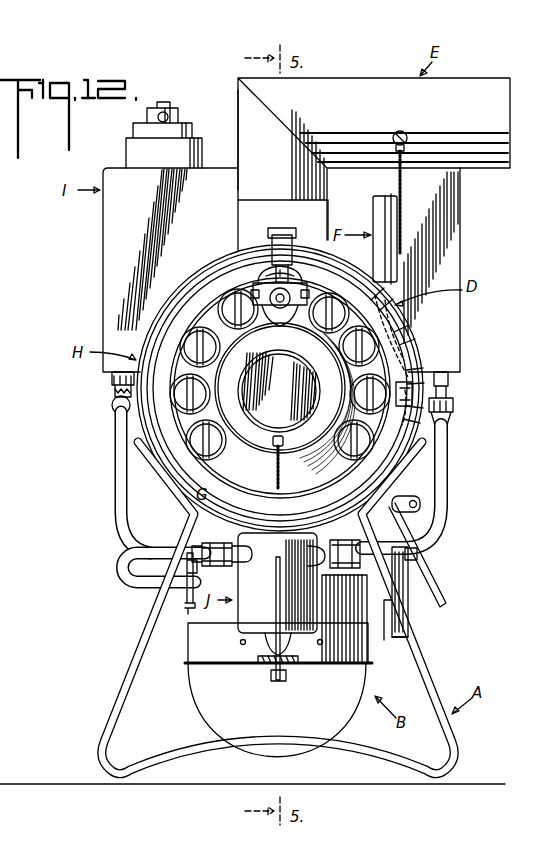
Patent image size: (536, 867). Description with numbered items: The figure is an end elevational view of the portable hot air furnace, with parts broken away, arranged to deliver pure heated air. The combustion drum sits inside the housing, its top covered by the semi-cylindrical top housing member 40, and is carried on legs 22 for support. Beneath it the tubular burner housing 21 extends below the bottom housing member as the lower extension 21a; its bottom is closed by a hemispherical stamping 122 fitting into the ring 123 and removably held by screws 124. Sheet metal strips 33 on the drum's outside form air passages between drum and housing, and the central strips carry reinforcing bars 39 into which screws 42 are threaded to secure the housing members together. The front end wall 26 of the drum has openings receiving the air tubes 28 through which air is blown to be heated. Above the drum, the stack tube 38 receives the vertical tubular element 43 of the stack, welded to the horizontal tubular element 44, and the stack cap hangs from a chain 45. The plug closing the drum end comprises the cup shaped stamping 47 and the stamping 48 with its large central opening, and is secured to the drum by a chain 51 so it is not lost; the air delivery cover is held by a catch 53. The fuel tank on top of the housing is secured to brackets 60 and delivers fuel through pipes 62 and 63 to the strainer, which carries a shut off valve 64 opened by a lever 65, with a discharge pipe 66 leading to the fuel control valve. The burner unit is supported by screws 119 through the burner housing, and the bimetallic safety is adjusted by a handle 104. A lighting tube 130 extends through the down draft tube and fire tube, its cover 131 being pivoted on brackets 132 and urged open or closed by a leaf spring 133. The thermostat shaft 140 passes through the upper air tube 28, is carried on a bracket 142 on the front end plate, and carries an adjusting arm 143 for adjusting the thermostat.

The tubular burner housing 21 is at (200, 612).
The lower extension of burner housing tube 21a is at (362, 620).
The legs 22 is at (130, 686).
The front end wall of combustion drum 26 is at (255, 447).
The air tubes 28 is at (233, 362).
The sheet metal strips 33 is at (402, 346).
The stack tube 38 is at (238, 214).
The reinforcing bars 39 is at (406, 388).
The top housing member 40 is at (240, 286).
The screws 42 is at (452, 385).
The vertical tubular element 43 is at (248, 100).
The horizontal tubular element 44 is at (345, 100).
The chain 45 is at (396, 183).
The cup shaped stamping 47 is at (286, 411).
The stamping with central opening 48 is at (200, 302).
The chain 51 is at (281, 472).
The catch 53 is at (282, 232).
The brackets 60 is at (110, 382).
The fuel pipe 62 is at (118, 492).
The fuel pipe 63 is at (440, 447).
The shut off valve 64 is at (356, 568).
The lever 65 is at (406, 614).
The discharge pipe 66 is at (128, 570).
The handle 104 is at (193, 586).
The screws 119 is at (395, 604).
The hemispherical stamping 122 is at (208, 704).
The ring 123 is at (206, 643).
The screws 124 is at (244, 645).
The lighting tube 130 is at (420, 556).
The cover 131 is at (440, 578).
The brackets 132 is at (422, 500).
The leaf spring 133 is at (420, 468).
The shaft 140 is at (288, 294).
The bracket 142 is at (272, 275).
The adjusting arm 143 is at (280, 312).